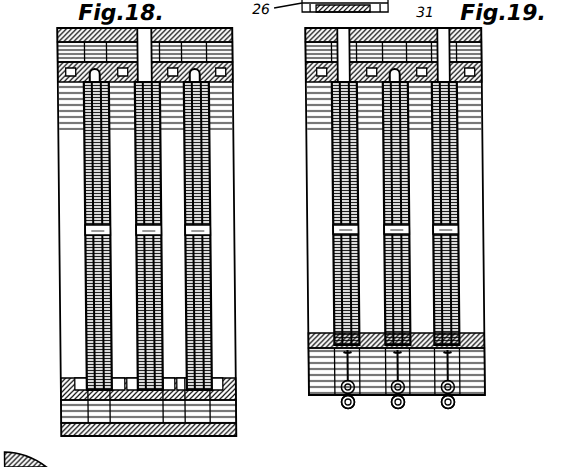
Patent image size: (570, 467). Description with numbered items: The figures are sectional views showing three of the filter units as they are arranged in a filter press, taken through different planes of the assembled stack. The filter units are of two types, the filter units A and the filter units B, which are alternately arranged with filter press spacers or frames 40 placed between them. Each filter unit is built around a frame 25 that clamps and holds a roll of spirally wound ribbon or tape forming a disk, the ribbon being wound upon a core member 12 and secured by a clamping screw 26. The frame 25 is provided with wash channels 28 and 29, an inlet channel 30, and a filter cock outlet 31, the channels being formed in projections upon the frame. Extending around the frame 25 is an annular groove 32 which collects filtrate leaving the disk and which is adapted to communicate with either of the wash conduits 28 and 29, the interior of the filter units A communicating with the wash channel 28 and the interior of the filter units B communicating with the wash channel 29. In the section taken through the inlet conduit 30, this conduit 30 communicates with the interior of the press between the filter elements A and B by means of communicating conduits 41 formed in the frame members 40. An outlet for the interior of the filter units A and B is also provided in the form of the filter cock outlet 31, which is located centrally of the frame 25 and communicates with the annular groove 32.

In FIG. 18, the core member 12 is at (136, 236).
In FIG. 19, the core member 12 is at (282, 232).
In FIG. 18, the frame 25 is at (59, 430).
In FIG. 19, the frame 25 is at (282, 412).
In FIG. 19, the clamping screw 26 is at (347, 408).
In FIG. 19, the wash channel 28 is at (310, 55).
In FIG. 18, the wash channel 29 is at (64, 55).
In FIG. 18, the inlet channel 30 is at (59, 410).
In FIG. 19, the filter cock outlet 31 is at (334, 395).
In FIG. 18, the annular groove 32 is at (61, 97).
In FIG. 19, the annular groove 32 is at (310, 110).
In FIG. 18, the filter press spacer 40 is at (145, 236).
In FIG. 19, the filter press spacer 40 is at (405, 213).
In FIG. 18, the communicating conduit 41 is at (77, 378).
In FIG. 18, the filter unit A is at (57, 150).
In FIG. 19, the filter unit A is at (280, 148).
In FIG. 18, the filter unit B is at (136, 176).
In FIG. 19, the filter unit B is at (456, 158).